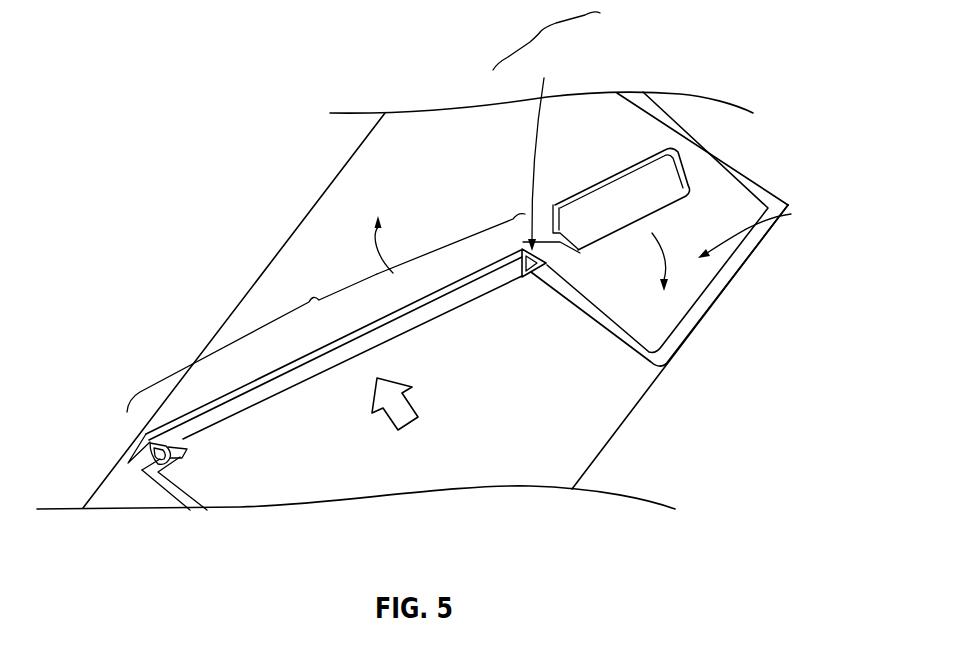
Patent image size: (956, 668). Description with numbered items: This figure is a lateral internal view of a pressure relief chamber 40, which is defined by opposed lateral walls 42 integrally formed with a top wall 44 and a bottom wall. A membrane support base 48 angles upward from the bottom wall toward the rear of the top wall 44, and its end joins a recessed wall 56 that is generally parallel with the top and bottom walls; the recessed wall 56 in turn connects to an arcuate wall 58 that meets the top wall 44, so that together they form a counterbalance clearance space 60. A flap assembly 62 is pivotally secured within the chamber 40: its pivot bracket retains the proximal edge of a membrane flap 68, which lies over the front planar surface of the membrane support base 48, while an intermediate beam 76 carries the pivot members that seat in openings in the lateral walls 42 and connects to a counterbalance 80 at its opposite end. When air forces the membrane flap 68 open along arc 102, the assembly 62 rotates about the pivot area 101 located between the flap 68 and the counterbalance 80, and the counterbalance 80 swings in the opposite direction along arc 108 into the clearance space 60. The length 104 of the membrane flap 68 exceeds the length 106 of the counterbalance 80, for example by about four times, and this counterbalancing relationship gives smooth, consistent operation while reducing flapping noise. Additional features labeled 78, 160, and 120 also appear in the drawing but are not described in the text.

The pressure relief chamber 40 is at (282, 111).
The lateral walls 42 is at (432, 148).
The top wall 44 is at (773, 191).
The membrane support base 48 is at (180, 459).
The recessed wall 56 is at (617, 319).
The arcuate wall 58 is at (725, 298).
The counterbalance clearance space 60 is at (791, 214).
The flap assembly 62 is at (294, 385).
The membrane flap 68 is at (272, 370).
The intermediate beam 76 is at (548, 232).
The detent 78 is at (521, 247).
The counterbalance 80 is at (653, 168).
The pivot area 101 is at (548, 149).
The arc 102 is at (392, 266).
The length of the membrane flap 104 is at (252, 336).
The length of the counterbalance 106 is at (546, 35).
The arc 108 is at (665, 254).
The applied force arrow 160 is at (388, 412).
The partial numeral 120 is at (423, 664).